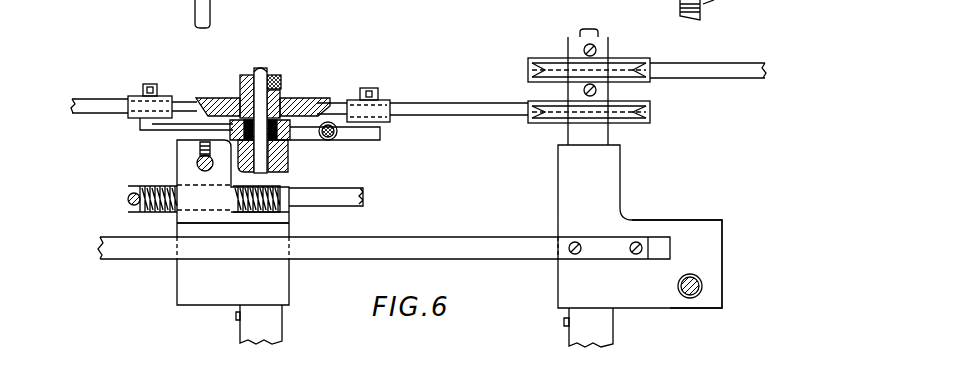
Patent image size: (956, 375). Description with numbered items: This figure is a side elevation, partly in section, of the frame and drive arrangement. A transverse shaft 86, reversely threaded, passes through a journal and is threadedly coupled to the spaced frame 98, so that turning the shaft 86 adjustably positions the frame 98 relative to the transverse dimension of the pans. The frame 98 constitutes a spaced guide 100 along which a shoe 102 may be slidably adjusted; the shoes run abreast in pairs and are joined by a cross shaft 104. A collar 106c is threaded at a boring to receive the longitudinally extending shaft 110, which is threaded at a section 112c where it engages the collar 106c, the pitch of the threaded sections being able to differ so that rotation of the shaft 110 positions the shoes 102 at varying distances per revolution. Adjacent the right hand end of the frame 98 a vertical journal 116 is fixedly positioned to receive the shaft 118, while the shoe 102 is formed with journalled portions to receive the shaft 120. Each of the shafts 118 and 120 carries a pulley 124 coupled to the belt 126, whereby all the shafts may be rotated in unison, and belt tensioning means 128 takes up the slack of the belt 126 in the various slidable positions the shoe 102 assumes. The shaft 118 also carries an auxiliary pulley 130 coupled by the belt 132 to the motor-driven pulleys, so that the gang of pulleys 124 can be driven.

The transverse shaft 86 is at (703, 286).
The frame 98 is at (694, 228).
The guide 100 is at (448, 248).
The shoe 102 is at (268, 223).
The cross shaft 104 is at (195, 163).
The collar 106c is at (185, 178).
The longitudinally extending shaft 110 is at (312, 190).
The threaded section 112c is at (128, 198).
The vertical journal 116 is at (568, 166).
The shaft 118 is at (587, 28).
The shaft 120 is at (258, 72).
The pulley 124 is at (291, 98).
The belt 126 is at (88, 102).
The belt tensioning means 128 is at (348, 136).
The clamp 130 is at (553, 58).
The belt 132 is at (742, 72).